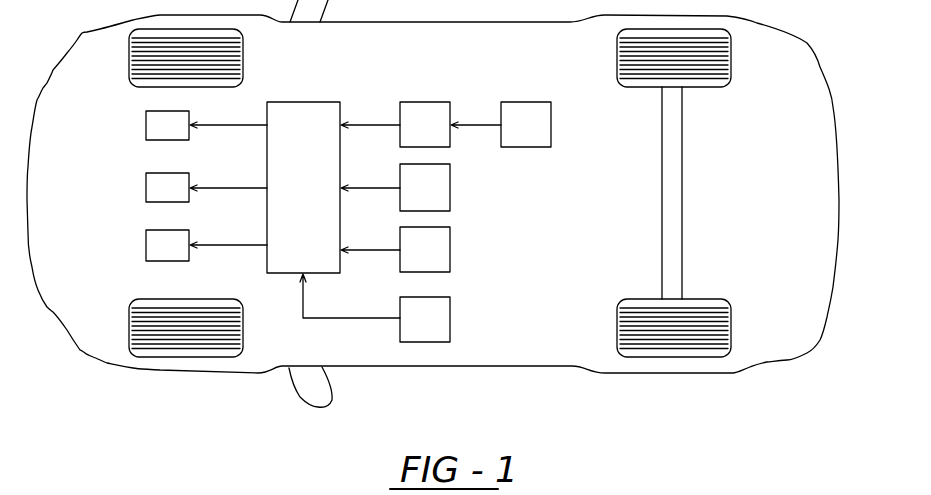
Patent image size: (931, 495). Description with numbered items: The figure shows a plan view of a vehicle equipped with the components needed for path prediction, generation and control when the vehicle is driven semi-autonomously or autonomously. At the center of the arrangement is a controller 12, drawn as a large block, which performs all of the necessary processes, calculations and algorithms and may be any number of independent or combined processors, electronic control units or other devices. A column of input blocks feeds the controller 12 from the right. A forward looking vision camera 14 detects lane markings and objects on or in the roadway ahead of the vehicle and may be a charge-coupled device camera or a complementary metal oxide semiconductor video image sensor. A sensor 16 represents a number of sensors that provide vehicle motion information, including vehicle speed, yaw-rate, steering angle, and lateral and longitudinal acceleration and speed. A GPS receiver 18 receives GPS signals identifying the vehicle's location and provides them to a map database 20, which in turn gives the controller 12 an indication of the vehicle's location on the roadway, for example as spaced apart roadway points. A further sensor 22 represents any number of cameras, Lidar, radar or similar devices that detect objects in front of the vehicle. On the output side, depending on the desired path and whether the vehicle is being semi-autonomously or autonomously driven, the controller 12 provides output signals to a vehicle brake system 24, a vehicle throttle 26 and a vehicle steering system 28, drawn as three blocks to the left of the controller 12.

The controller 12 is at (303, 102).
The forward looking vision camera 14 is at (450, 250).
The sensor 16 is at (450, 190).
The GPS receiver 18 is at (523, 102).
The map database 20 is at (426, 102).
The sensor 22 is at (450, 318).
The vehicle brake system 24 is at (146, 125).
The vehicle throttle 26 is at (146, 188).
The vehicle steering system 28 is at (146, 245).